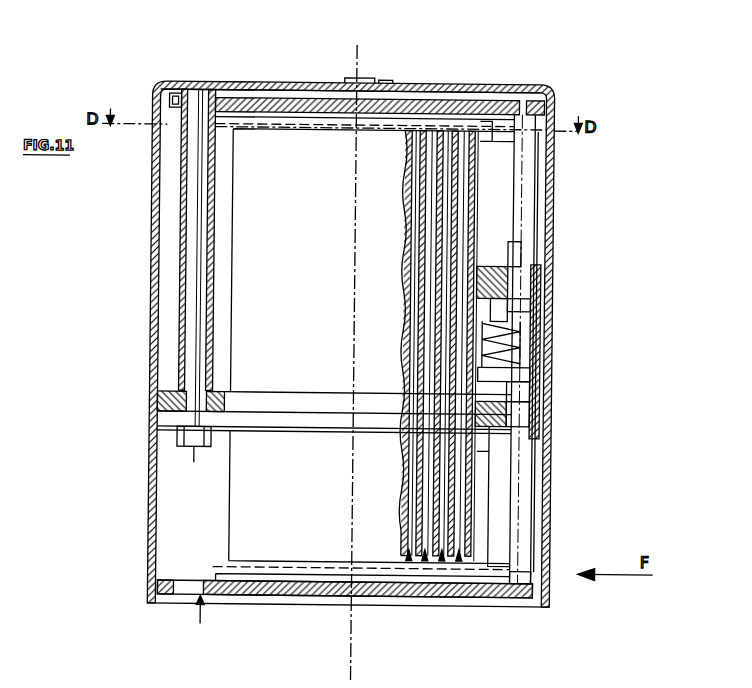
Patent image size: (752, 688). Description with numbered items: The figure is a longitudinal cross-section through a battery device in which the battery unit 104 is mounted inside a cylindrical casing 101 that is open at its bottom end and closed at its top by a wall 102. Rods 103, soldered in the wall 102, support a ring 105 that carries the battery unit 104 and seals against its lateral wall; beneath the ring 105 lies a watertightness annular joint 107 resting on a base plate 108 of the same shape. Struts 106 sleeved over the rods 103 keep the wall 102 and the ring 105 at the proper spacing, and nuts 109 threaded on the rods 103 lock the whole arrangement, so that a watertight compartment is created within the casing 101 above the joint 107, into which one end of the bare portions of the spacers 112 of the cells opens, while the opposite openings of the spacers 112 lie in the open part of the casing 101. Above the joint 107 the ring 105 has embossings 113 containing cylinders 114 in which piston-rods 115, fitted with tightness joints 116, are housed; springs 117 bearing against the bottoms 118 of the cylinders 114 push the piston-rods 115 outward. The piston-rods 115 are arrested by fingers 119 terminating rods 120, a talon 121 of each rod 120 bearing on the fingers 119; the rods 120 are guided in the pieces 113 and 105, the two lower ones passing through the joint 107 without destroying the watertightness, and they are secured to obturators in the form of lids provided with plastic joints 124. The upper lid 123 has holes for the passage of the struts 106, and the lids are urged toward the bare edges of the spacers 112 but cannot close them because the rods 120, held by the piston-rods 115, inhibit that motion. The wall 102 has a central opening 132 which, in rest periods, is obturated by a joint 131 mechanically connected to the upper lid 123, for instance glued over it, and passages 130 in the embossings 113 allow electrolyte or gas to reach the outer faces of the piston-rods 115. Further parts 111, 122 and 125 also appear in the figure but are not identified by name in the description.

The cylindrical casing 101 is at (150, 206).
The wall 102 is at (267, 84).
The rods 103 is at (200, 84).
The battery unit 104 is at (252, 546).
The ring 105 is at (160, 397).
The struts 106 is at (185, 274).
The watertightness annular joint 107 is at (168, 419).
The base plate 108 is at (158, 433).
The nuts 109 is at (189, 448).
The plates 111 is at (463, 557).
The spacers 112 is at (427, 557).
The embossings 113 is at (504, 267).
The cylinders 114 is at (522, 390).
The piston-rods 115 is at (512, 342).
The tightness joints 116 is at (536, 403).
The springs 117 is at (522, 336).
The bottoms 118 is at (526, 423).
The fingers 119 is at (544, 298).
The rods 120 is at (520, 177).
The talon 121 is at (532, 260).
The sleeve 122 is at (544, 285).
The upper lid 123 is at (538, 110).
The plastic joints 124 is at (470, 112).
The spacer 125 is at (167, 105).
The passages 130 is at (544, 270).
The joint 131 is at (380, 83).
The central opening 132 is at (355, 83).